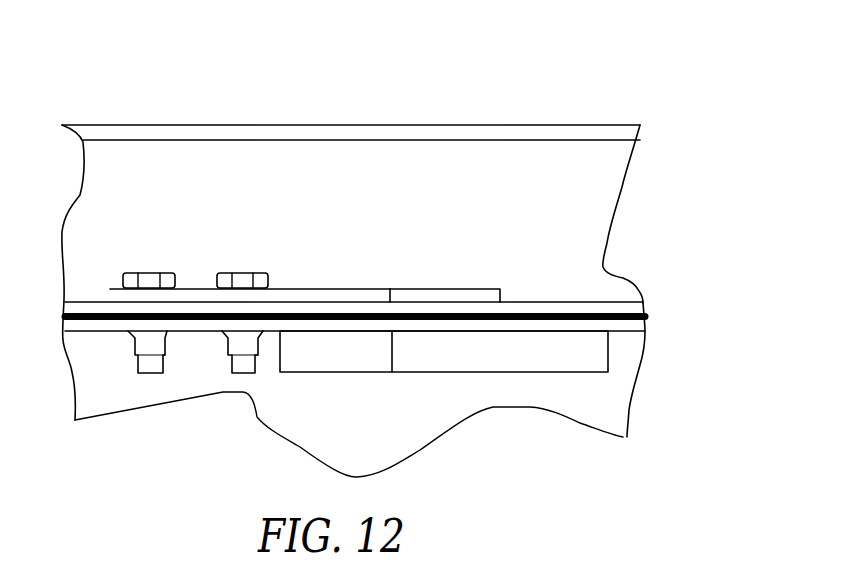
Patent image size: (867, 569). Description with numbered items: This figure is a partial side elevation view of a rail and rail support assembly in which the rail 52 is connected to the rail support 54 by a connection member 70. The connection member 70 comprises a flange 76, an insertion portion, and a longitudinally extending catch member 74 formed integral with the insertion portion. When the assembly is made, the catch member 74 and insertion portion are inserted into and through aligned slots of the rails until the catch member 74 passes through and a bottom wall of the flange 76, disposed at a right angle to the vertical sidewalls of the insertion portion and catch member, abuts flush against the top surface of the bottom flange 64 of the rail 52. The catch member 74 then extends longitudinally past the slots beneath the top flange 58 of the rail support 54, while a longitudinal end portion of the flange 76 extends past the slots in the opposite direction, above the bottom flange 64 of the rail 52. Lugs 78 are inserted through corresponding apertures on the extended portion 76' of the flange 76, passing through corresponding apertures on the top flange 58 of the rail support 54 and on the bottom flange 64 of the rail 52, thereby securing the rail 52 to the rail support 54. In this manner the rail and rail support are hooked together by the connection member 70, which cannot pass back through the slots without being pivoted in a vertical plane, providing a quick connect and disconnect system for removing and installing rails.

The rail 52 is at (622, 187).
The rail support 54 is at (630, 372).
The top flange 58 is at (585, 322).
The bottom flange 64 is at (532, 308).
The connection member 70 is at (108, 293).
The catch member 74 is at (533, 352).
The flange 76 is at (436, 164).
The extended portion 76' is at (167, 375).
The lugs 78 is at (245, 273).